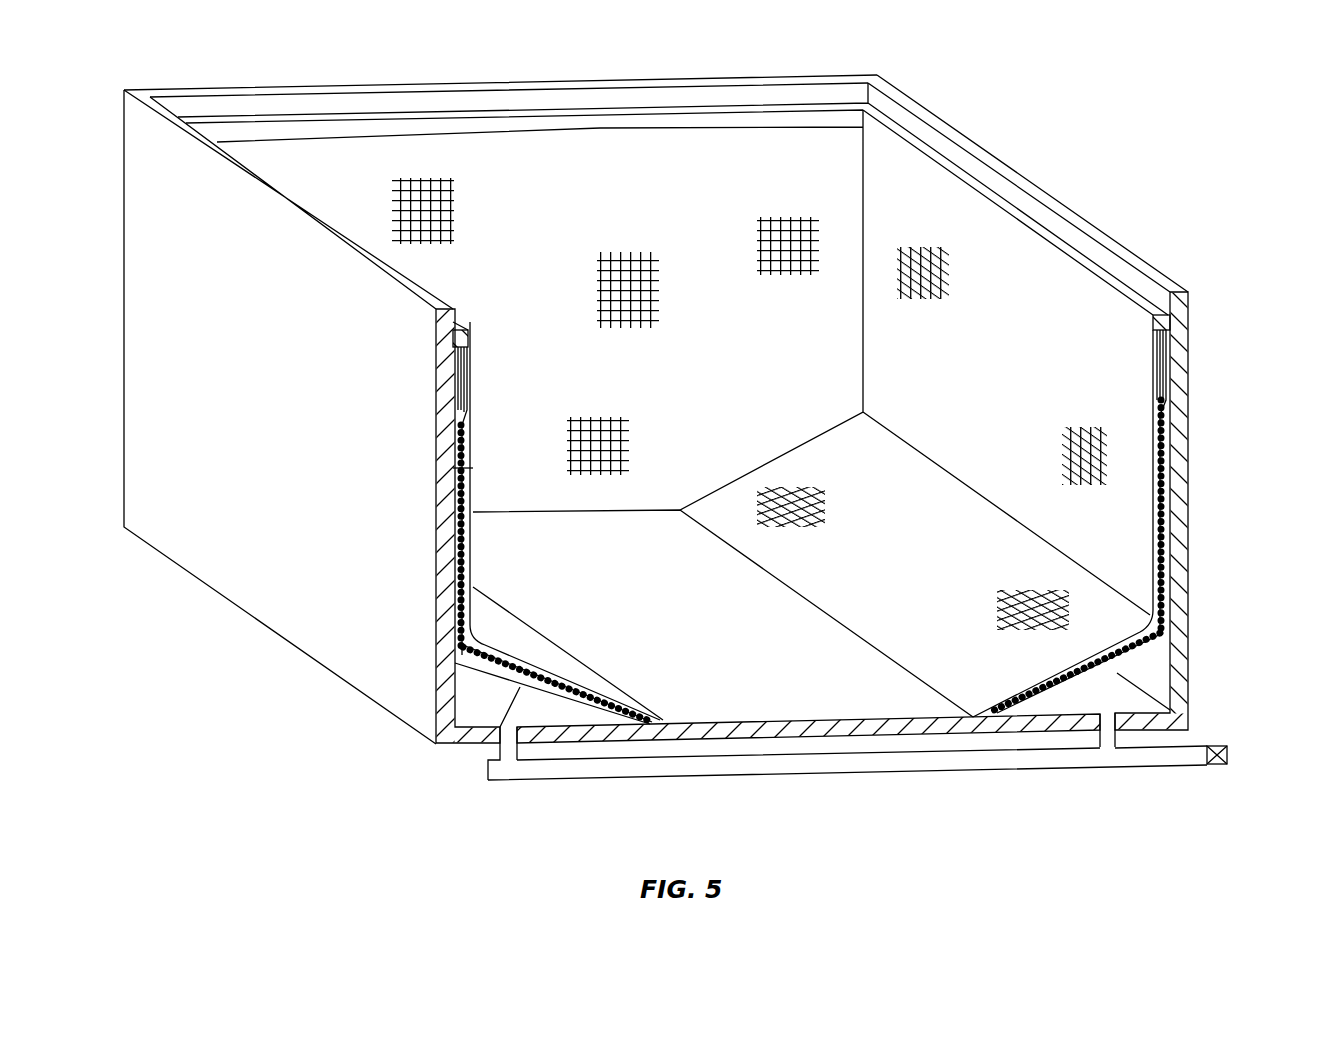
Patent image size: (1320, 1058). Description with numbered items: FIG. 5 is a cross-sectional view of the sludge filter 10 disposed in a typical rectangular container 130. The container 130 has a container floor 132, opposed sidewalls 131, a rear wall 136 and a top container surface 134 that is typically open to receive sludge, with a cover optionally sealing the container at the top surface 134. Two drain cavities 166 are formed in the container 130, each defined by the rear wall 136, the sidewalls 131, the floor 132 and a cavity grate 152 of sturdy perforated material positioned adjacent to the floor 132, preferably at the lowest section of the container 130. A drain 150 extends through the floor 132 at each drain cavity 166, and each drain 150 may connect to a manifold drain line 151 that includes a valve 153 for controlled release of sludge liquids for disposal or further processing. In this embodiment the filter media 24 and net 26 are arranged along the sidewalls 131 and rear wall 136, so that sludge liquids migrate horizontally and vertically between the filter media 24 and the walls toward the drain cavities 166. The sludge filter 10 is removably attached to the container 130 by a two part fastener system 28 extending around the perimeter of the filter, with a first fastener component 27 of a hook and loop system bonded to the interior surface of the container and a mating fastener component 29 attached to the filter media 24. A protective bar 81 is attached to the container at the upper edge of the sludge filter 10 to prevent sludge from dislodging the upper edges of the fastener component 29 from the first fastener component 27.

The sludge filter 10 is at (1175, 430).
The filter media 24 is at (1100, 337).
The net 26 is at (1168, 507).
The first fastener component 27 is at (458, 368).
The two part fastener system 28 is at (458, 375).
The fastener component 29 is at (458, 393).
The protective bar 81 is at (468, 332).
The rectangular container 130 is at (1040, 190).
The sidewalls 131 is at (298, 464).
The container floor 132 is at (860, 730).
The top container surface 134 is at (890, 88).
The rear wall 136 is at (700, 93).
The drain 150 is at (530, 760).
The manifold drain line 151 is at (1018, 760).
The cavity grate 152 is at (500, 743).
The valve 153 is at (1230, 752).
The drain cavity 166 is at (470, 693).